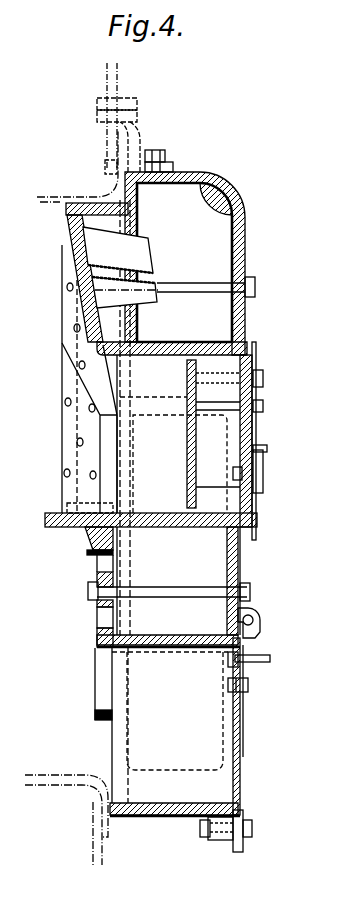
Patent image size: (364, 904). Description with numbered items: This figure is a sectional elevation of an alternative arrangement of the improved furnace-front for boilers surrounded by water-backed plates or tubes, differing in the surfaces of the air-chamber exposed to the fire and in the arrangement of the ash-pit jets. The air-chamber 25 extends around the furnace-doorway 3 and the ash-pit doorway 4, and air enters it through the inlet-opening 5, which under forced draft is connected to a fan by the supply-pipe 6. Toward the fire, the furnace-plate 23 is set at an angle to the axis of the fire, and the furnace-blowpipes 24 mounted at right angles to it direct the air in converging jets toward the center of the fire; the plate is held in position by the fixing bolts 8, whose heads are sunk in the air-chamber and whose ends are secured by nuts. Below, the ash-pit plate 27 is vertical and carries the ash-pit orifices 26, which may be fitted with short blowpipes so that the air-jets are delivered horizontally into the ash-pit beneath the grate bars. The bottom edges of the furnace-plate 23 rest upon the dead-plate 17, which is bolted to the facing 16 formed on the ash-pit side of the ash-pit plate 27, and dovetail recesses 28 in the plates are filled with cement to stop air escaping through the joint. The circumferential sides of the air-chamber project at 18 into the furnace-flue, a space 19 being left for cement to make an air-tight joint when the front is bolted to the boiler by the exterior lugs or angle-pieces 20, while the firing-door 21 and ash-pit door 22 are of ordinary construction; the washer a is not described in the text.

The furnace-doorway 3 is at (200, 434).
The ash-pit doorway 4 is at (138, 756).
The inlet-opening 5 is at (156, 455).
The supply-pipe 6 is at (173, 455).
The fixing bolts 8 is at (196, 283).
The facing 16 is at (87, 542).
The dead-plate 17 is at (52, 527).
The projection of circumferential sides of air-chamber 18 is at (46, 432).
The space 19 is at (66, 207).
The exterior lugs or angle-pieces 20 is at (135, 138).
The firing-door 21 is at (250, 428).
The ash-pit door 22 is at (243, 710).
The furnace-plate 23 is at (75, 241).
The furnace-blowpipes 24 is at (155, 255).
The air-chamber 25 is at (172, 398).
The ash-pit orifices 26 is at (97, 612).
The ash-pit plate 27 is at (98, 582).
The dovetail recesses 28 is at (85, 505).
The washer a is at (85, 596).